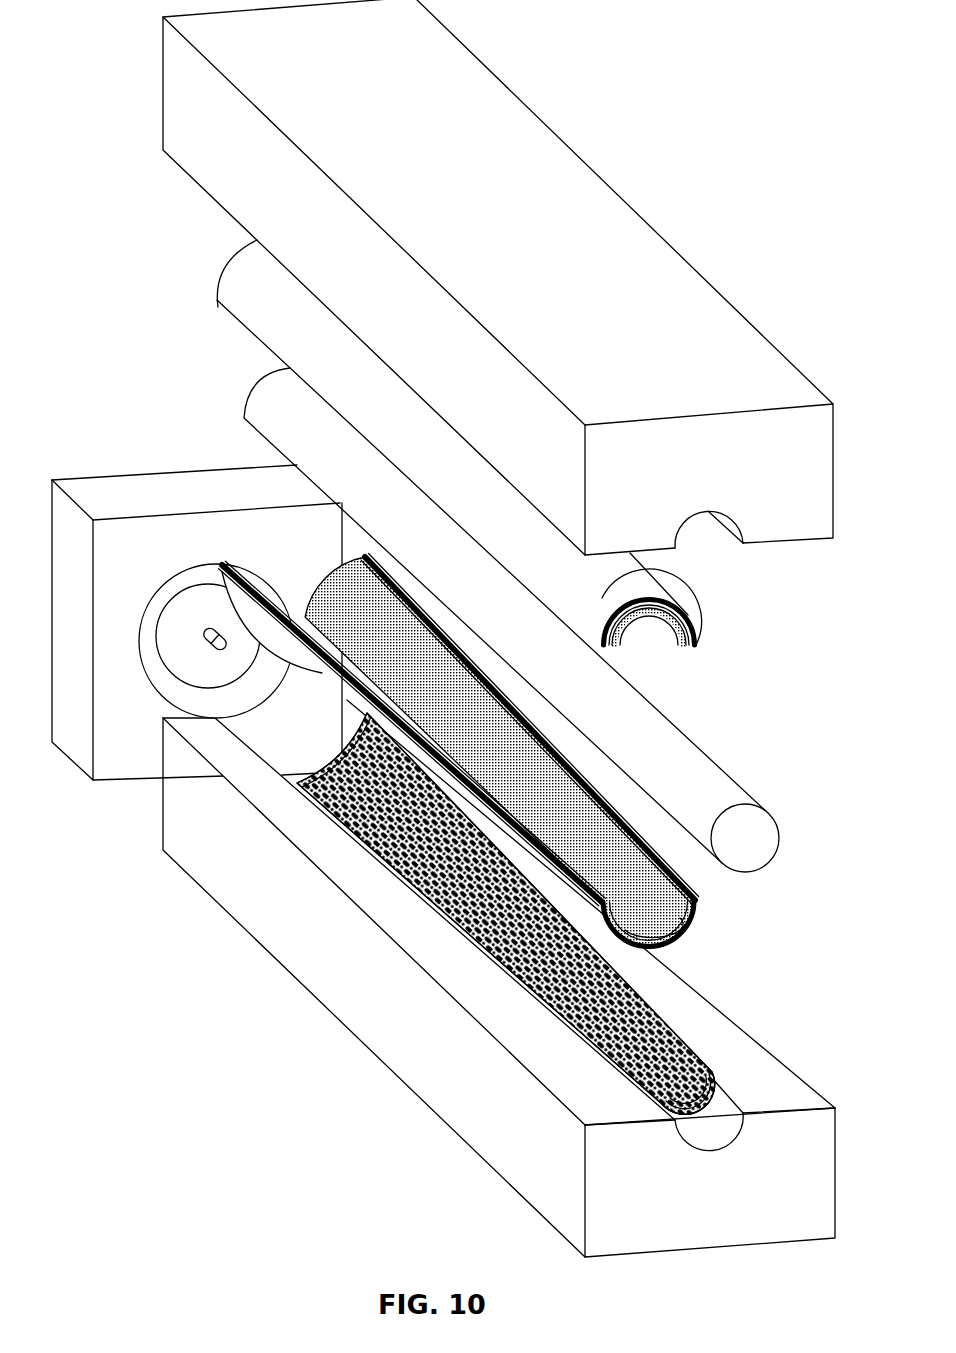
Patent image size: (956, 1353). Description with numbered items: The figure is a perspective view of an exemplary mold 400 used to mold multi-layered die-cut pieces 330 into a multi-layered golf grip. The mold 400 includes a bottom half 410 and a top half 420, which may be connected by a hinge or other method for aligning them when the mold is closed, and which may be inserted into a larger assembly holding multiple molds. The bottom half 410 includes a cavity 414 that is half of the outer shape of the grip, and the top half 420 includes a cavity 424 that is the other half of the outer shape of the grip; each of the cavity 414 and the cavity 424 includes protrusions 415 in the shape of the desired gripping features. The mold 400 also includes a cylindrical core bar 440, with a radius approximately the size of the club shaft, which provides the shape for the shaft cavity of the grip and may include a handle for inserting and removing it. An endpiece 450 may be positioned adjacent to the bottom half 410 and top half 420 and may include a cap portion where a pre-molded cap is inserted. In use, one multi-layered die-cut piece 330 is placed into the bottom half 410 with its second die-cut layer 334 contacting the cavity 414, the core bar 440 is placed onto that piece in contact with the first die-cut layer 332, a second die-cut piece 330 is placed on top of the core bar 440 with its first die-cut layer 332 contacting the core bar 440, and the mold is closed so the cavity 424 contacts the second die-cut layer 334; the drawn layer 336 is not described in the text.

The mold 400 is at (677, 36).
The bottom half 410 is at (225, 880).
The cavity 414 is at (692, 1000).
The protrusions 415 is at (676, 1050).
The top half 420 is at (613, 232).
The cavity 424 is at (723, 550).
The core bar 440 is at (258, 412).
The endpiece 450 is at (130, 470).
The multi-layered die-cut piece 330 is at (479, 677).
The first die-cut layer 332 is at (682, 638).
The second die-cut layer 334 is at (653, 573).
The middle layer 336 is at (690, 640).